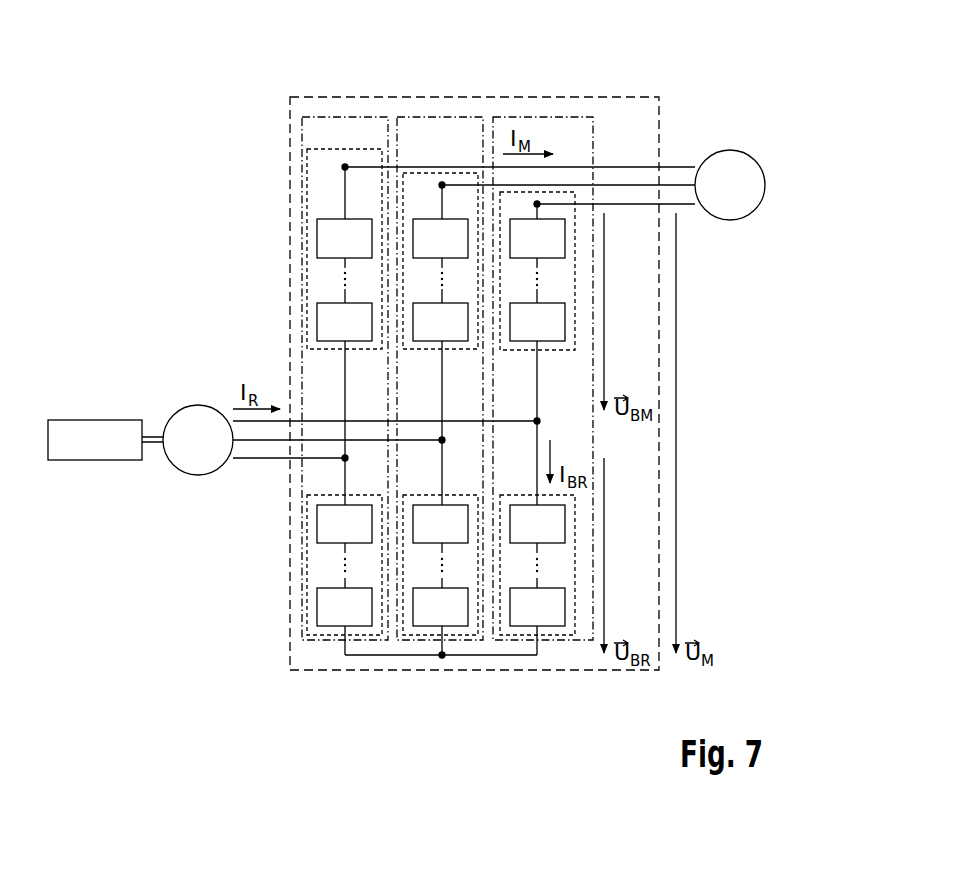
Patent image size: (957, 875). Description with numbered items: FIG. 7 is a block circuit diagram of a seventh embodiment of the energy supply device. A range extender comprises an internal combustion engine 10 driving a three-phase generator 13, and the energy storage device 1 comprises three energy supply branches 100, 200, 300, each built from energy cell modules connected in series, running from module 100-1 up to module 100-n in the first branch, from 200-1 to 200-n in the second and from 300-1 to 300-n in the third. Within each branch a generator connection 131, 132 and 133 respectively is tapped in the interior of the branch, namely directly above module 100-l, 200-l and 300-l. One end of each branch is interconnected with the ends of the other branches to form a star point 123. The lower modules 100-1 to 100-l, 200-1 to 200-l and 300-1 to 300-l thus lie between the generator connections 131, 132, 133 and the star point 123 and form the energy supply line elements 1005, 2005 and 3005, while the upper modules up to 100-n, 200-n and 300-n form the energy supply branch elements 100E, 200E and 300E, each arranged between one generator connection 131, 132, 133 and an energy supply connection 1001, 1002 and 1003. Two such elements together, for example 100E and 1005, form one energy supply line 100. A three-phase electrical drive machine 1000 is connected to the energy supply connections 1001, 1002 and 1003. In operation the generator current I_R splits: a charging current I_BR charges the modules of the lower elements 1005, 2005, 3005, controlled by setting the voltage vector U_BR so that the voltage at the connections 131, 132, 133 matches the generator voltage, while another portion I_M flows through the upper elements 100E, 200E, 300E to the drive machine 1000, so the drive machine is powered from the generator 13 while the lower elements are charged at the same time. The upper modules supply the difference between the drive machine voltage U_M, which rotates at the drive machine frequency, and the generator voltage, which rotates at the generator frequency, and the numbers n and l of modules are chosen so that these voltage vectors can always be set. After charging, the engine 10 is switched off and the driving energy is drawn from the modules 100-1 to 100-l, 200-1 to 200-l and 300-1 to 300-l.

The energy storage device 1 is at (290, 572).
The internal combustion engine 10 is at (97, 420).
The generator 13 is at (198, 405).
The energy supply branch 100 is at (314, 117).
The energy supply branch 200 is at (480, 117).
The energy supply branch 300 is at (567, 117).
The energy supply branch element 100E is at (302, 181).
The energy supply branch element 200E is at (460, 173).
The energy supply branch element 300E is at (572, 192).
The energy cell module 100-n is at (317, 241).
The energy cell module 100-l is at (317, 524).
The energy cell module 100-1 is at (317, 608).
The energy cell module 200-n is at (427, 219).
The energy cell module 200-l is at (421, 495).
The energy cell module 200-1 is at (415, 628).
The energy cell module 300-n is at (565, 238).
The energy cell module 300-l is at (514, 495).
The energy cell module 300-1 is at (545, 628).
The energy supply connection 1001 is at (345, 164).
The energy supply connection 1002 is at (442, 182).
The energy supply connection 1003 is at (537, 201).
The electrical drive machine 1000 is at (730, 150).
The energy supply line element 1005 is at (325, 640).
The energy supply line element 2005 is at (422, 640).
The energy supply line element 3005 is at (520, 640).
The generator connection 131 is at (342, 459).
The generator connection 132 is at (445, 440).
The generator connection 133 is at (539, 419).
The star point 123 is at (443, 658).